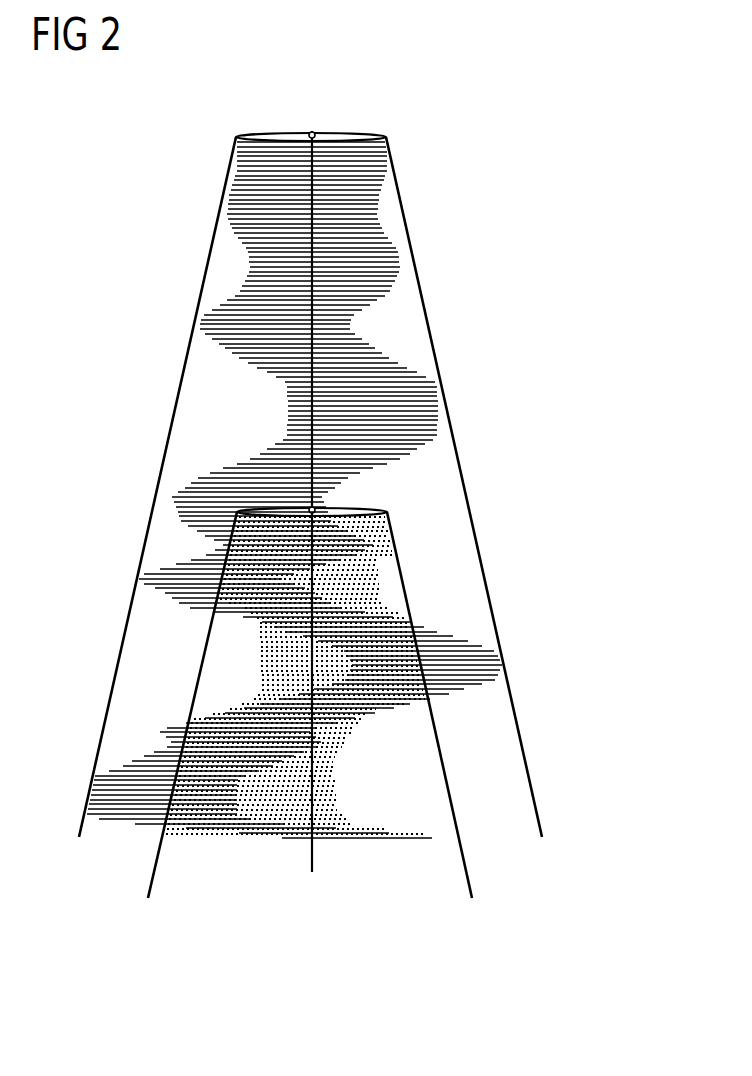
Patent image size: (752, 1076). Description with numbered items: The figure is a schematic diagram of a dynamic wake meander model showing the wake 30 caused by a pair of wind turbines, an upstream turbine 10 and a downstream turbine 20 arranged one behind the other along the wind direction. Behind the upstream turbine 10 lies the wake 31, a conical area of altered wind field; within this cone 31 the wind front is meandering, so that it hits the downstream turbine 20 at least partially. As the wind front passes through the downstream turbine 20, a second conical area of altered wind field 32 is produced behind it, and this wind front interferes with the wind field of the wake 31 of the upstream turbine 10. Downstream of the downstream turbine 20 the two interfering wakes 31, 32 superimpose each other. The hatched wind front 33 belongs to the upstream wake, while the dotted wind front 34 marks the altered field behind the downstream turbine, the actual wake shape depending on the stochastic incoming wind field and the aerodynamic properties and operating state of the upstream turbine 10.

The upstream turbine 10 is at (347, 137).
The downstream turbine 20 is at (383, 504).
The wake 30 is at (548, 618).
The wake behind the upstream turbine 31 is at (432, 341).
The conical area of altered wind field behind the downstream turbine 32 is at (452, 800).
The first material / layer structure 33 is at (374, 237).
The second material / porous structure 34 is at (217, 797).